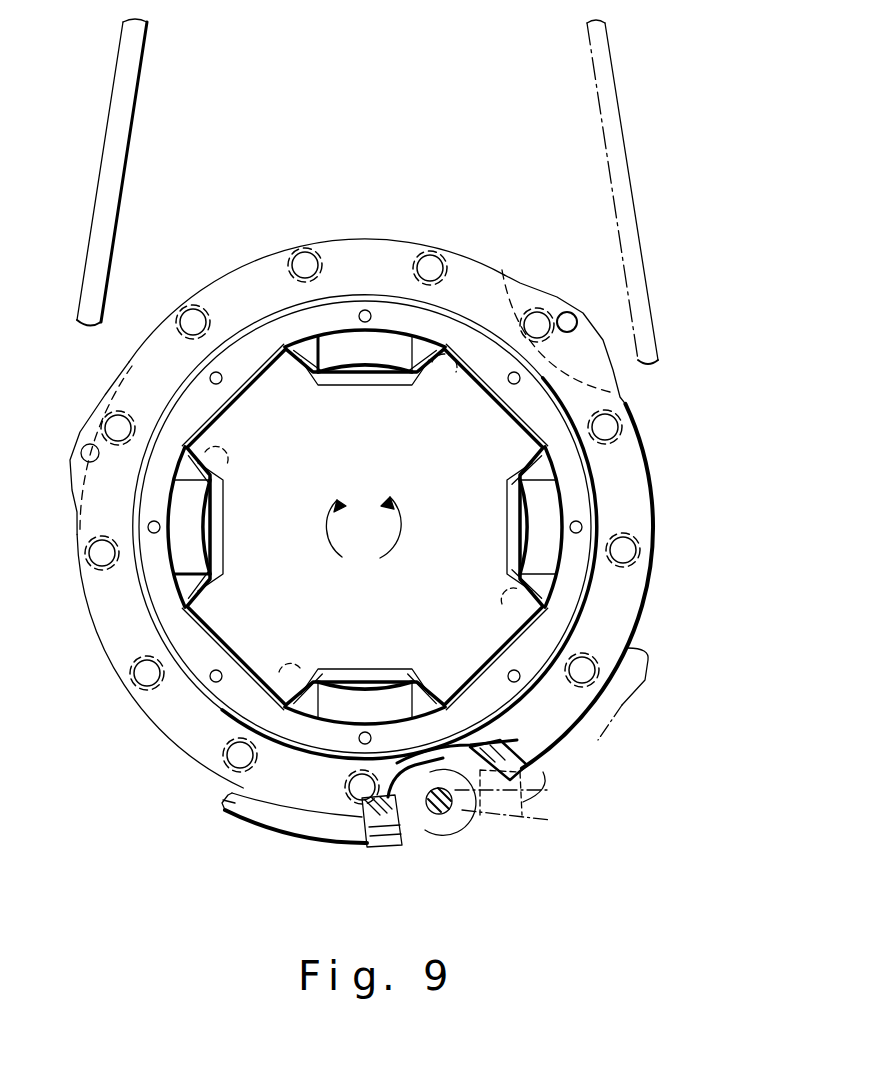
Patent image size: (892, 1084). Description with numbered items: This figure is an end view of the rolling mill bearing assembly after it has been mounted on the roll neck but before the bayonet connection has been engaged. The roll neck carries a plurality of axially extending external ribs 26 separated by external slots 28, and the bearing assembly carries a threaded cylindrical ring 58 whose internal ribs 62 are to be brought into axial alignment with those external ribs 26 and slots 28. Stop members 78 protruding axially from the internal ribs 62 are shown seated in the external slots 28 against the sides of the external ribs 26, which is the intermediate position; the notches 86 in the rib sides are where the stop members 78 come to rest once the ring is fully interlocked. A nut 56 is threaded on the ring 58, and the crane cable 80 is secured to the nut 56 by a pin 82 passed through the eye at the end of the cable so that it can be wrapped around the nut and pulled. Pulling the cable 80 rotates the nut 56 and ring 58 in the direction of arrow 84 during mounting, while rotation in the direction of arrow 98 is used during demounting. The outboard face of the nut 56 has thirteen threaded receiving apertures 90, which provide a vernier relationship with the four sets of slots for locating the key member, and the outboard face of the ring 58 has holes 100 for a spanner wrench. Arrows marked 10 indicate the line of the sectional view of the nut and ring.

The section line direction 10 is at (393, 623).
The external ribs 26 is at (255, 402).
The external slots 28 is at (370, 372).
The nut 56 is at (610, 615).
The cylindrical ring 58 is at (570, 582).
The internal ribs 62 is at (400, 345).
The stop members 78 is at (305, 345).
The crane cable 80 is at (118, 132).
The pin 82 is at (447, 805).
The arrow 84 is at (327, 550).
The notches 86 is at (445, 375).
The threaded receiving apertures 90 is at (605, 427).
The arrow 98 is at (400, 550).
The holes 100 is at (363, 314).